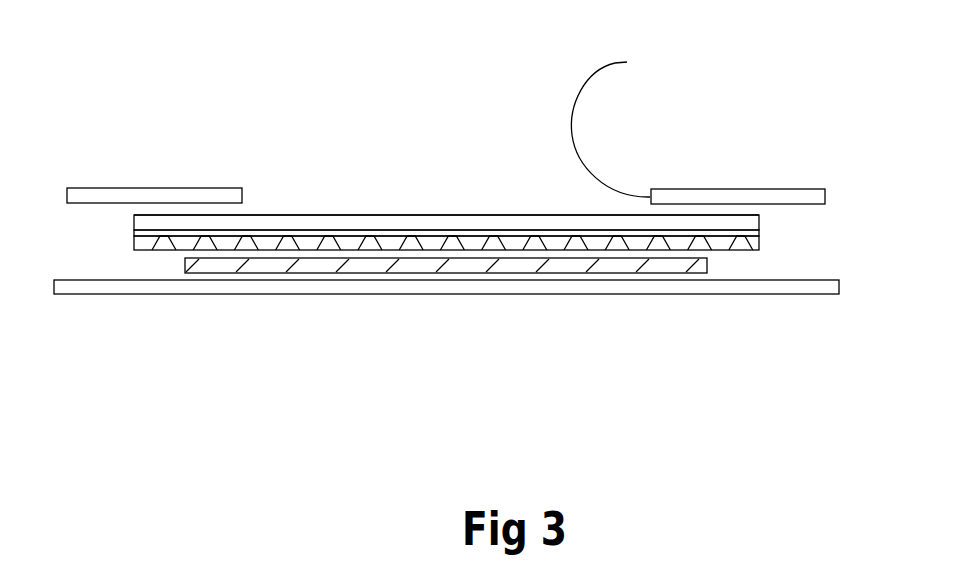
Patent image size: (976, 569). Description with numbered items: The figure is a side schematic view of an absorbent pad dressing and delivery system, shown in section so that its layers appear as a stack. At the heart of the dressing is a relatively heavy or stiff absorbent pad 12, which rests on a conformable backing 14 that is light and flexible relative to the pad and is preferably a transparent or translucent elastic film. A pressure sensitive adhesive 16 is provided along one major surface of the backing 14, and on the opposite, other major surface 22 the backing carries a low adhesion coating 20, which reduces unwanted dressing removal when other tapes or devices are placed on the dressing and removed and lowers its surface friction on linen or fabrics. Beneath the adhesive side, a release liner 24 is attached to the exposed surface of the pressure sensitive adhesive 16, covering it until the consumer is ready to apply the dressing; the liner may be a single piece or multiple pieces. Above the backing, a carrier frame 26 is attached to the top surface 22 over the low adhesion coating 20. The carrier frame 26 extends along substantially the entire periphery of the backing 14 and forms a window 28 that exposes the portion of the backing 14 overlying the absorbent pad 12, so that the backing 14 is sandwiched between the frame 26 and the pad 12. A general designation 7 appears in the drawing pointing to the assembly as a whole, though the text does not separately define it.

The laminate assembly 7 is at (717, 62).
The absorbent pad 12 is at (500, 273).
The backing 14 is at (348, 222).
The pressure sensitive adhesive 16 is at (647, 251).
The low adhesion coating 20 is at (151, 231).
The other major surface 22 is at (287, 215).
The release liner 24 is at (182, 294).
The carrier frame 26 is at (176, 188).
The window 28 is at (617, 124).